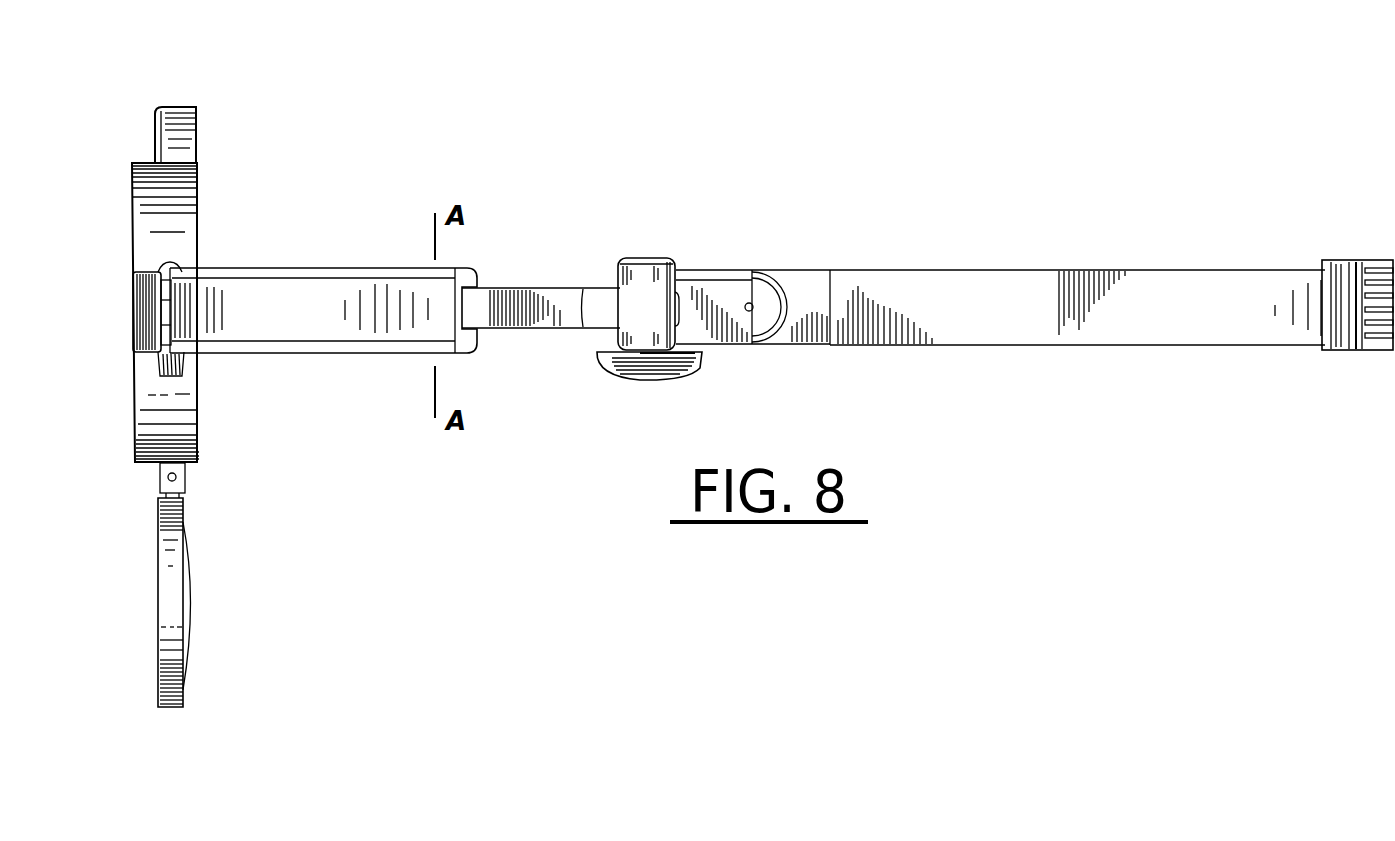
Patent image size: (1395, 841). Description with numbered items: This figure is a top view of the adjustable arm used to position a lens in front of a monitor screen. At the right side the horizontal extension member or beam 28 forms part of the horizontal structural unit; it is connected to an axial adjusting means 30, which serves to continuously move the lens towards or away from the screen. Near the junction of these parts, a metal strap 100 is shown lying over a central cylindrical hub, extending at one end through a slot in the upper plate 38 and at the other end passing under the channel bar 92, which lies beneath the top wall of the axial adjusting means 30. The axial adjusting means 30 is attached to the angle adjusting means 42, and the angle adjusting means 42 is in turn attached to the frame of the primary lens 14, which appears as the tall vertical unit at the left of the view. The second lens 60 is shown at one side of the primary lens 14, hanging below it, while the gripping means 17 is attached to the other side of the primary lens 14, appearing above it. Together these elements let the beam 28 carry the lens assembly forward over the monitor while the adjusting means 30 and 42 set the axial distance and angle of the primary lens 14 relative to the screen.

The primary lens 14 is at (186, 194).
The gripping means 17 is at (192, 108).
The horizontal extension member or beam 28 is at (968, 280).
The axial adjusting means 30 is at (340, 250).
The upper plate 38 is at (720, 288).
The angle adjusting means 42 is at (172, 264).
The second lens 60 is at (194, 598).
The channel bar 92 is at (535, 288).
The metal strap 100 is at (610, 308).